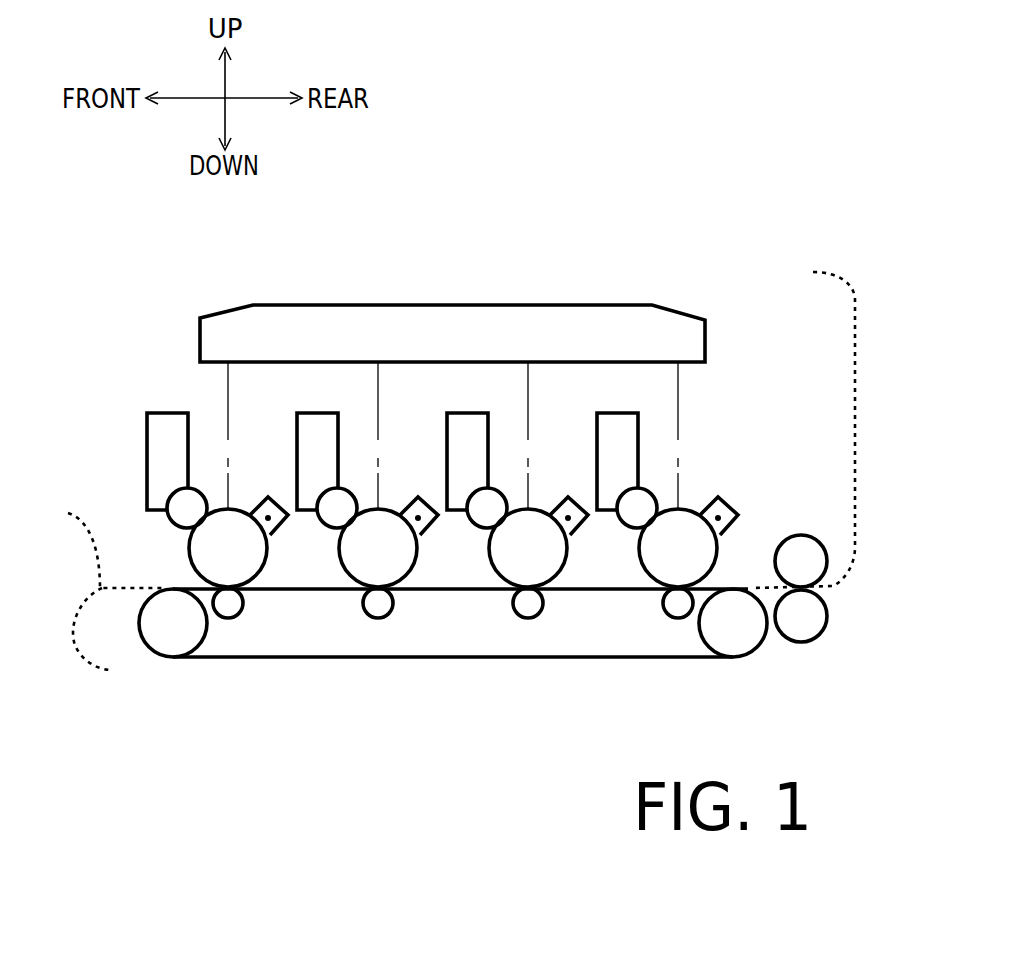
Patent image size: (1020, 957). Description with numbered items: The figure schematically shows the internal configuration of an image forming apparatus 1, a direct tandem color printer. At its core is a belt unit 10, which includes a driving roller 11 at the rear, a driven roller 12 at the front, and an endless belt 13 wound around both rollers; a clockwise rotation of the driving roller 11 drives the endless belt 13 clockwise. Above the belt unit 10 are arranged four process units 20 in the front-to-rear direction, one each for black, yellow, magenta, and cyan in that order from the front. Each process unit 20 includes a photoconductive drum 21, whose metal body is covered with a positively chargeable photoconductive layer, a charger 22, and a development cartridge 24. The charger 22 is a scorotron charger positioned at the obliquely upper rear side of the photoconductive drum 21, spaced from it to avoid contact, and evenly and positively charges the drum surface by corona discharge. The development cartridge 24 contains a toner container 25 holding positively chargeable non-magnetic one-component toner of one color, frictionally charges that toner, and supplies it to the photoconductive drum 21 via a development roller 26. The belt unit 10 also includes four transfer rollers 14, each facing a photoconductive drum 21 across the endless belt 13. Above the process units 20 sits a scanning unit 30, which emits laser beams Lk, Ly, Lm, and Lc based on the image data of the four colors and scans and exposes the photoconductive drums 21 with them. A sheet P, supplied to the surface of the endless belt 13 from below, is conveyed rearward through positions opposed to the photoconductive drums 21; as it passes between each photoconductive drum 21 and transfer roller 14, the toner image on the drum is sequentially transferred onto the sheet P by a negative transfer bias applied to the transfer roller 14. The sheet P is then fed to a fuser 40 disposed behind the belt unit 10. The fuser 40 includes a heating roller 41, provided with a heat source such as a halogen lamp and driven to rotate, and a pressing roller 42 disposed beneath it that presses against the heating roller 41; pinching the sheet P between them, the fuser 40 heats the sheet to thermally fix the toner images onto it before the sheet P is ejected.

The image forming apparatus 1 is at (130, 258).
The belt unit 10 is at (462, 651).
The driving roller 11 is at (732, 642).
The driven roller 12 is at (168, 638).
The endless belt 13 is at (507, 660).
The transfer roller 14 is at (232, 610).
The process unit 20 is at (182, 404).
The photoconductive drum 21 is at (197, 548).
The charger 22 is at (277, 531).
The development cartridge 24 is at (147, 412).
The toner container 25 is at (163, 465).
The development roller 26 is at (180, 513).
The scanning unit 30 is at (297, 303).
The fuser 40 is at (800, 578).
The heating roller 41 is at (802, 548).
The pressing roller 42 is at (803, 630).
The sheet P is at (855, 357).
The laser beam Lk is at (228, 380).
The laser beam Ly is at (378, 380).
The laser beam Lm is at (528, 380).
The laser beam Lc is at (678, 380).